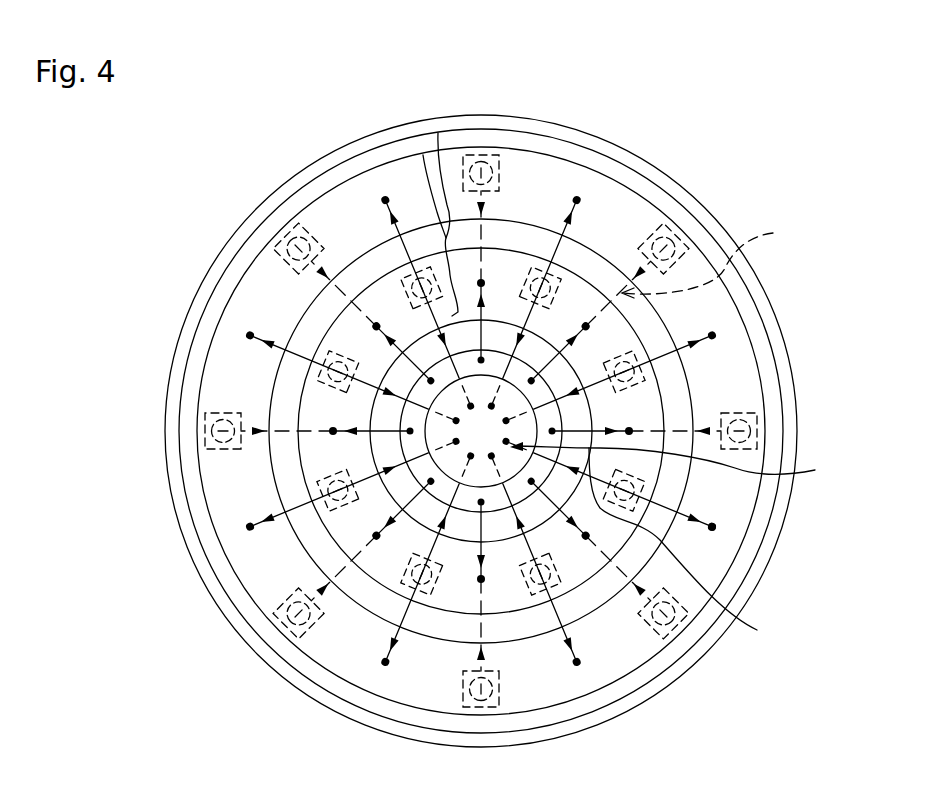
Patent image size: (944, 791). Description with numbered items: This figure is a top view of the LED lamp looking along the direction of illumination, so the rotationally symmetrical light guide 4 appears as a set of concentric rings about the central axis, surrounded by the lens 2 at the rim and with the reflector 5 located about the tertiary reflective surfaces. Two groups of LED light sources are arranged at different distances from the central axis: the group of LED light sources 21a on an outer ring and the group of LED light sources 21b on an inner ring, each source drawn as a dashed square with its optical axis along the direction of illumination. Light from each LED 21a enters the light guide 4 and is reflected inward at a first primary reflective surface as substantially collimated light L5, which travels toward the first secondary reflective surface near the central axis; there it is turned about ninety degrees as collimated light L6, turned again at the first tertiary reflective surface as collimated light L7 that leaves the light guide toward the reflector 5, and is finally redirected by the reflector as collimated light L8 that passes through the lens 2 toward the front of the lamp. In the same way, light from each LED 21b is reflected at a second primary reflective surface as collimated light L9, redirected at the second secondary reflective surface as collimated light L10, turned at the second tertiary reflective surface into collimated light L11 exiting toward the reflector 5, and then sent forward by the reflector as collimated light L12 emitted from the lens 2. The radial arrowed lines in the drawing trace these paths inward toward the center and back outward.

The lens 2 is at (594, 134).
The light guide 4 is at (482, 434).
The reflector 5 is at (438, 133).
The LED light sources 21a is at (673, 237).
The LED light sources 21b is at (645, 480).
The substantially collimated light L5 is at (712, 258).
The substantially collimated light L6 is at (534, 383).
The substantially collimated light L7 is at (588, 326).
The substantially collimated light L8 is at (562, 395).
The substantially collimated light L9 is at (688, 550).
The substantially collimated light L10 is at (686, 464).
The substantially collimated light L11 is at (672, 518).
The substantially collimated light L12 is at (714, 528).